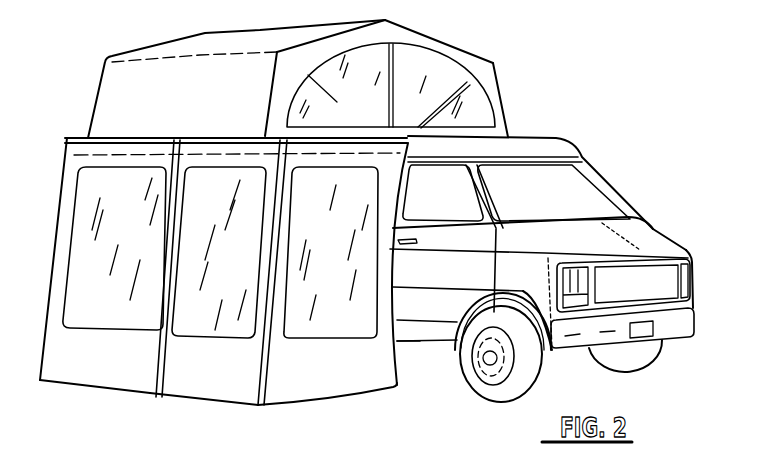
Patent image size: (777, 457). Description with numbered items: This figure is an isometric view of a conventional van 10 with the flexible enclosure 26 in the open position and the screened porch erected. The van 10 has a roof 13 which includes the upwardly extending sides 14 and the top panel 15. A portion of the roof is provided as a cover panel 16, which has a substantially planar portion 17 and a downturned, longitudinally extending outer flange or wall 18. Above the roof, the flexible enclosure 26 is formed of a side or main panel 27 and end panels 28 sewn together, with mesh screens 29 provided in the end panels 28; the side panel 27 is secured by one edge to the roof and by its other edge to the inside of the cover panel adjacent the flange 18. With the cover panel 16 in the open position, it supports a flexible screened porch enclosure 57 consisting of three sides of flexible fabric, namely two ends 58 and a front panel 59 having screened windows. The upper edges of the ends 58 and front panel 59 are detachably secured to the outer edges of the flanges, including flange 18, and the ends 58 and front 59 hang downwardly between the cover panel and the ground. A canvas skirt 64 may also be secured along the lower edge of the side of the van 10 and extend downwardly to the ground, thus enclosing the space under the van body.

The van 10 is at (544, 249).
The roof 13 is at (558, 152).
The upwardly extending sides 14 is at (530, 140).
The top panel 15 is at (508, 137).
The cover panel 16 is at (247, 178).
The planar portion 17 is at (352, 160).
The outer flange 18 is at (240, 138).
The flexible enclosure 26 is at (287, 77).
The side panel 27 is at (105, 108).
The end panels 28 is at (489, 93).
The mesh screens 29 is at (428, 63).
The screened porch enclosure 57 is at (88, 400).
The ends 58 is at (365, 383).
The front panel 59 is at (218, 383).
The canvas skirt 64 is at (399, 353).